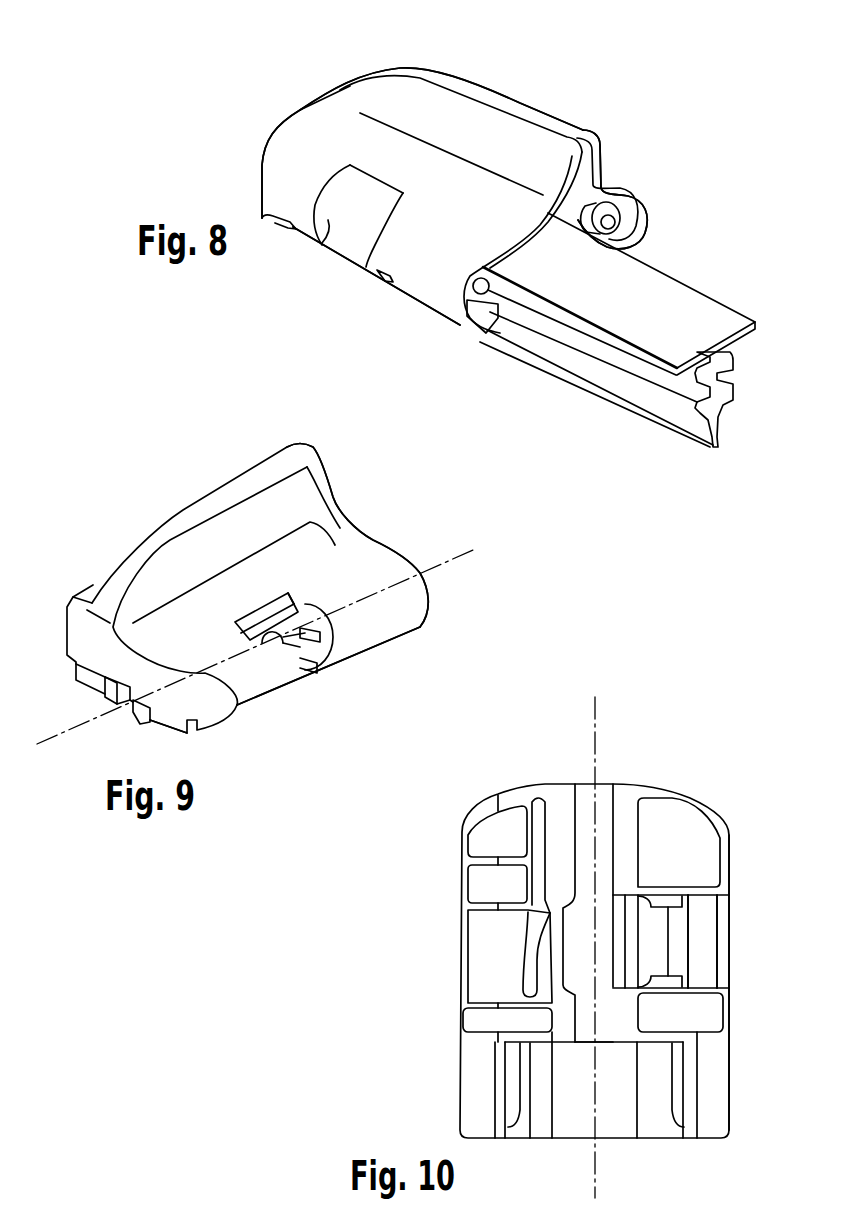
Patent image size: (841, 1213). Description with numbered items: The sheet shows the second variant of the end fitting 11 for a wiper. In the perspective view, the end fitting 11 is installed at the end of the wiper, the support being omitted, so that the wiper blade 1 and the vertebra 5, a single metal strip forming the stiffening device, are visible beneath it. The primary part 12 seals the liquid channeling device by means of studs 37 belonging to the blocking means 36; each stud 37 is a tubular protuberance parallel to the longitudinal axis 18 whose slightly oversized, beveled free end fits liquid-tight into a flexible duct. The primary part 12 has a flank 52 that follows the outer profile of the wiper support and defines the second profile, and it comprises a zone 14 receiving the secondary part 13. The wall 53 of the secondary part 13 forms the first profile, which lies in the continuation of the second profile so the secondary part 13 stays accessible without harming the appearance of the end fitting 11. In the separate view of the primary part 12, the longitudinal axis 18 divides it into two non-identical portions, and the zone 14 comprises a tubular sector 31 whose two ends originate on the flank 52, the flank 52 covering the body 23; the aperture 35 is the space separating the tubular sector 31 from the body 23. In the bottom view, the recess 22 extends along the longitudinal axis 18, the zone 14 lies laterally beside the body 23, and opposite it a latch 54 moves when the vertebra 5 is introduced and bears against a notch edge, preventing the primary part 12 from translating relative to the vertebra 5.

In FIG. 8, the wiper blade 1 is at (738, 423).
In FIG. 8, the vertebra 5 is at (683, 303).
In FIG. 8, the end fitting 11 is at (655, 100).
In FIG. 8, the primary part 12 is at (432, 310).
In FIG. 9, the primary part 12 is at (165, 497).
In FIG. 10, the primary part 12 is at (437, 1083).
In FIG. 8, the secondary part 13 is at (350, 263).
In FIG. 8, the zone 14 is at (326, 176).
In FIG. 9, the zone 14 is at (290, 686).
In FIG. 10, the zone 14 is at (727, 922).
In FIG. 9, the longitudinal axis 18 is at (457, 555).
In FIG. 10, the longitudinal axis 18 is at (593, 732).
In FIG. 10, the recess 22 is at (603, 1027).
In FIG. 9, the body 23 is at (285, 622).
In FIG. 10, the body 23 is at (625, 810).
In FIG. 9, the tubular sector 31 is at (327, 637).
In FIG. 10, the tubular sector 31 is at (702, 936).
In FIG. 9, the aperture 35 is at (265, 635).
In FIG. 8, the blocking means 36 is at (617, 215).
In FIG. 8, the stud 37 is at (614, 225).
In FIG. 8, the flank 52 is at (380, 103).
In FIG. 9, the flank 52 is at (297, 498).
In FIG. 8, the wall 53 is at (328, 222).
In FIG. 10, the latch 54 is at (528, 970).